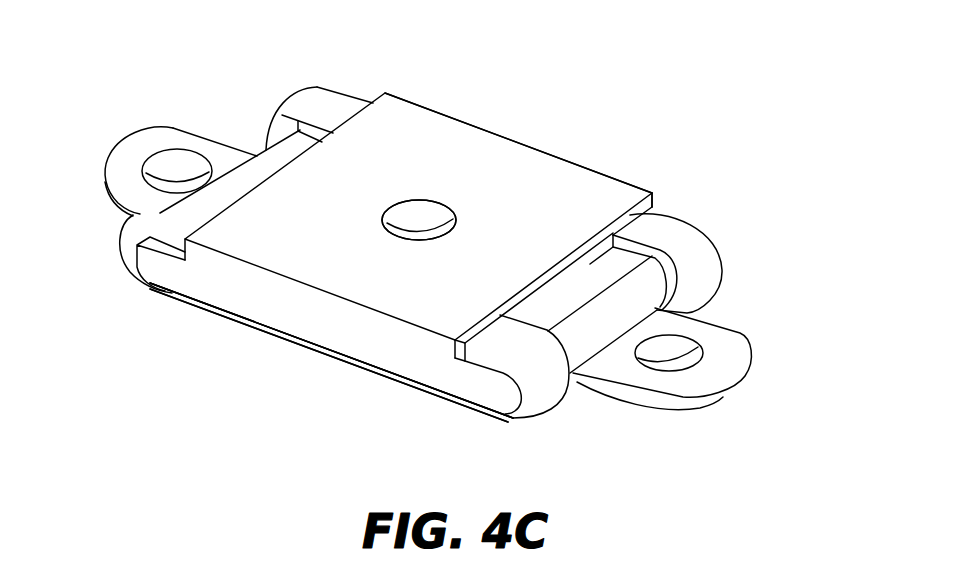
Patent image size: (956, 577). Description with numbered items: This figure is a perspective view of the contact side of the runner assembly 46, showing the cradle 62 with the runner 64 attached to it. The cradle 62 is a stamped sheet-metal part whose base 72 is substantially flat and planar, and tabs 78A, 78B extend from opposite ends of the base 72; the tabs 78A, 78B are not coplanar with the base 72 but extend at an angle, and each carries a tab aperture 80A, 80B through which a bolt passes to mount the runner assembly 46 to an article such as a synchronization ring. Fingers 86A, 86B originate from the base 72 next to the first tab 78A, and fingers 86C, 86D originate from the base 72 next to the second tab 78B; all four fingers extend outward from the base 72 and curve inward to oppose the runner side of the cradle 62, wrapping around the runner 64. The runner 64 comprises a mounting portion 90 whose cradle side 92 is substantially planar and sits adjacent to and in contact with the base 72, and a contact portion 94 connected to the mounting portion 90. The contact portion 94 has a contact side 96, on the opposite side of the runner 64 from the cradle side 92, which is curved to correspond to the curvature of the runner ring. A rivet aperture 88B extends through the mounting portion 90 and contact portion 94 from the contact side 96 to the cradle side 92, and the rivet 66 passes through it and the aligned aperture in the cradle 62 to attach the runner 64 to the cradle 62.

The runner assembly 46 is at (606, 106).
The cradle 62 is at (495, 434).
The runner 64 is at (472, 99).
The rivet 66 is at (421, 224).
The base 72 is at (273, 333).
The tab 78A is at (105, 159).
The tab 78B is at (697, 393).
The tab aperture 80A is at (177, 160).
The tab aperture 80B is at (687, 343).
The finger 86A is at (318, 100).
The finger 86B is at (115, 205).
The finger 86C is at (550, 390).
The finger 86D is at (703, 273).
The rivet aperture 88B is at (395, 207).
The mounting portion 90 is at (450, 371).
The cradle side 92 is at (360, 360).
The contact portion 94 is at (630, 214).
The contact side 96 is at (583, 183).